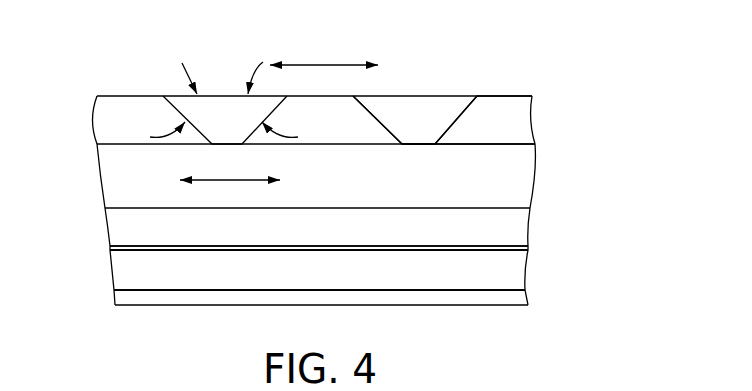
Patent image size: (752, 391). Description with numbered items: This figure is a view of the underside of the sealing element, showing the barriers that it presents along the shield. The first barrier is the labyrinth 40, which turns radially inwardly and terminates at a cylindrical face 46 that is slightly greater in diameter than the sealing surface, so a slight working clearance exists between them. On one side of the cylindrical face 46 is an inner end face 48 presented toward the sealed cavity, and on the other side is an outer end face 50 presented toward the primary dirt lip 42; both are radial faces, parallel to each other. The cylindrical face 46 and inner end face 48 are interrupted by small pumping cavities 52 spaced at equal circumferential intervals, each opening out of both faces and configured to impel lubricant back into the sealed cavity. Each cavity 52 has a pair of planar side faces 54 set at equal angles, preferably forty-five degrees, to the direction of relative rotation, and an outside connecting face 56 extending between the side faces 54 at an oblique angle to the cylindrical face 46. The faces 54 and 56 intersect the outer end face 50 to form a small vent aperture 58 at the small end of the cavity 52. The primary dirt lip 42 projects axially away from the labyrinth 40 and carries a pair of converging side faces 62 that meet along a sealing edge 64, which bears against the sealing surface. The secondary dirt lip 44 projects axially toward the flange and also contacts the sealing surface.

The labyrinth 40 is at (110, 117).
The primary dirt lip 42 is at (127, 263).
The secondary dirt lip 44 is at (180, 300).
The cylindrical face 46 is at (517, 116).
The inner end face 48 is at (512, 96).
The outer end face 50 is at (502, 144).
The pumping cavity 52 is at (221, 107).
The side face 54 is at (389, 125).
The outside connecting face 56 is at (430, 105).
The vent aperture 58 is at (420, 145).
The side face 62 is at (515, 222).
The sealing edge 64 is at (442, 250).